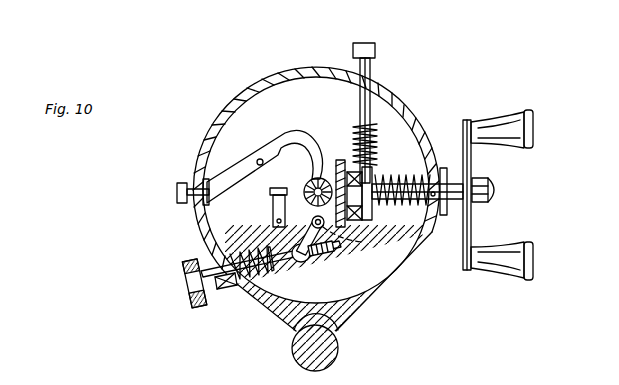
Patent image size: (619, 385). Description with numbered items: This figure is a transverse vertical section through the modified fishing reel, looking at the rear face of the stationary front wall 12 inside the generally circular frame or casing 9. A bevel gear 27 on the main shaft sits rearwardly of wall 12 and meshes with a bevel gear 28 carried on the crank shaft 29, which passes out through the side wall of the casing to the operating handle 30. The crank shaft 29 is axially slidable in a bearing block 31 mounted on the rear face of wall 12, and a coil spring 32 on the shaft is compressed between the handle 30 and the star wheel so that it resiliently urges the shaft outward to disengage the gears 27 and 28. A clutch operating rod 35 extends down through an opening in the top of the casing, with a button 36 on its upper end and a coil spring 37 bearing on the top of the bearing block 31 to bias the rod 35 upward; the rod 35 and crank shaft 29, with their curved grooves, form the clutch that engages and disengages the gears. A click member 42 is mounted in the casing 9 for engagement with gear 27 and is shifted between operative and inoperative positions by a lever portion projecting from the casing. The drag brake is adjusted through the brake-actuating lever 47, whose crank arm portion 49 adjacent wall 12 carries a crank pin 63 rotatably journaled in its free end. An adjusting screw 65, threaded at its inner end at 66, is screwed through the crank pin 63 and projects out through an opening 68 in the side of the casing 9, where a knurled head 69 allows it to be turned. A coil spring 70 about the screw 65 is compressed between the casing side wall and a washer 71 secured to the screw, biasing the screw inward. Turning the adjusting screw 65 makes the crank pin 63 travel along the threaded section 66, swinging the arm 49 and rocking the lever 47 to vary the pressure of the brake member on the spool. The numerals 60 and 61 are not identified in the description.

The frame or casing 9 is at (320, 68).
The stationary front wall 12 is at (285, 75).
The bevel gear 27 is at (311, 179).
The bevel gear 28 is at (345, 175).
The crank shaft 29 is at (452, 185).
The operating handle 30 is at (471, 158).
The bearing block 31 is at (382, 172).
The coil spring 32 is at (425, 240).
The clutch operating shaft or rod 35 is at (371, 68).
The button 36 is at (365, 43).
The coil spring 37 is at (372, 127).
The click member 42 is at (230, 165).
The brake-actuating lever 47 is at (356, 238).
The crank arm portion 49 is at (332, 247).
The bracket body 60 is at (272, 211).
The bracket cap 61 is at (270, 194).
The crank pin 63 is at (316, 264).
The adjusting screw 65 is at (286, 272).
The threaded section 66 is at (330, 257).
The opening 68 is at (232, 291).
The knurled head 69 is at (190, 283).
The coil spring 70 is at (240, 258).
The washer 71 is at (266, 257).